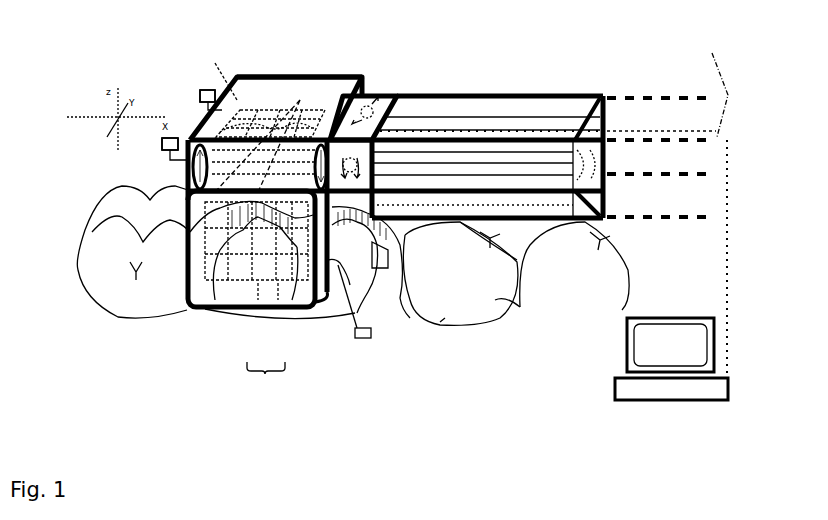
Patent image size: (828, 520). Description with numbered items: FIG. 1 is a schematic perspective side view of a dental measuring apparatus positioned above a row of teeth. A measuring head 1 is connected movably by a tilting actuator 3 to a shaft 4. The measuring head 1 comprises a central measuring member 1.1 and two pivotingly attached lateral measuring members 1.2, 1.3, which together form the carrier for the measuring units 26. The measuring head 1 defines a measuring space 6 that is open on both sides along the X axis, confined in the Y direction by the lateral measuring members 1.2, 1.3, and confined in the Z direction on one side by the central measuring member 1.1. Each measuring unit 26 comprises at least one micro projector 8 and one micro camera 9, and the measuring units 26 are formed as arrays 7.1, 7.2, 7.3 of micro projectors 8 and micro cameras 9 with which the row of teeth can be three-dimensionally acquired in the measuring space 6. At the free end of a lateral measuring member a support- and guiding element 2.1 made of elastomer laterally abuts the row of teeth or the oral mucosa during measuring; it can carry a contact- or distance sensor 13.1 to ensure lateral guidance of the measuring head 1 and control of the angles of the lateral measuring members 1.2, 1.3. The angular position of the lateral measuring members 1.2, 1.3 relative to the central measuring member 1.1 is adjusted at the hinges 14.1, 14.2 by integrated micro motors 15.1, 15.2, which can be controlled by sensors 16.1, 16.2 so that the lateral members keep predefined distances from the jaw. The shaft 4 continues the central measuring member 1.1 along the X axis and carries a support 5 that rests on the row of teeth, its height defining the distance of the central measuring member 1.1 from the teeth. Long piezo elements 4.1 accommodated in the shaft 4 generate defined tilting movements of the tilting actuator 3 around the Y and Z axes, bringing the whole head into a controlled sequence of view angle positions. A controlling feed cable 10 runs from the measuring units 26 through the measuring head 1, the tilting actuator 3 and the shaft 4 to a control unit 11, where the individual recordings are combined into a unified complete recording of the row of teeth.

The measuring head 1 is at (175, 92).
The central measuring member 1.1 is at (254, 95).
The lateral measuring member 1.2 is at (207, 305).
The lateral measuring member 1.3 is at (303, 73).
The support- and guiding element 2.1 is at (345, 302).
The tilting actuator 3 is at (383, 94).
The shaft 4 is at (418, 110).
The piezo elements 4.1 is at (437, 115).
The support 5 is at (477, 203).
The measuring space 6 is at (178, 206).
The array of micro projectors and micro cameras 7.1 is at (276, 118).
The array of micro projectors and micro cameras 7.2 is at (233, 285).
The array of micro projectors and micro cameras 7.3 is at (335, 76).
The micro projector 8 is at (259, 300).
The micro camera 9 is at (279, 300).
The controlling feed cable 10 is at (601, 343).
The control unit 11 is at (648, 385).
The contact- or distance sensor 13.1 is at (368, 340).
The hinge 14.1 is at (213, 77).
The integrated micro motor 15.1 is at (237, 100).
The sensor 16.1 is at (200, 97).
The hinge 14.2 is at (162, 148).
The integrated micro motor 15.2 is at (136, 156).
The sensor 16.2 is at (153, 156).
The measuring unit 26 is at (266, 383).